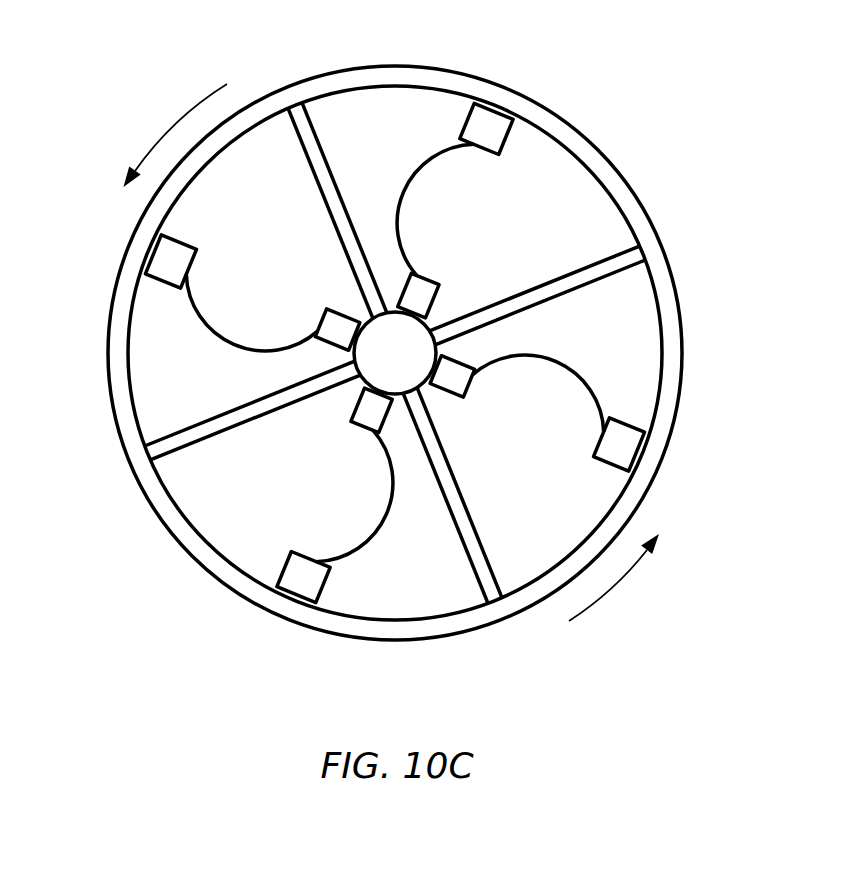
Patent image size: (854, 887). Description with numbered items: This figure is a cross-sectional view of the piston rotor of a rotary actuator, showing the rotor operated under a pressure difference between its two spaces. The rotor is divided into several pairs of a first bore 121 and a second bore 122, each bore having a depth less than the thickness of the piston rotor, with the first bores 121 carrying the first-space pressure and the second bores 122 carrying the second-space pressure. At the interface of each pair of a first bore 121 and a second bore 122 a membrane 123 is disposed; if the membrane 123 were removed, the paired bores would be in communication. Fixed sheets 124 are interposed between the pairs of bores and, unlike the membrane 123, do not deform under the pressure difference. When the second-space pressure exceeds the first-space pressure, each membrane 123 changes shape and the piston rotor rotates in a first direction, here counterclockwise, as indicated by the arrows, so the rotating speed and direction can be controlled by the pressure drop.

The first bore 121 is at (400, 100).
The second bore 122 is at (570, 188).
The membrane 123 is at (440, 148).
The fixed sheet 124 is at (297, 118).